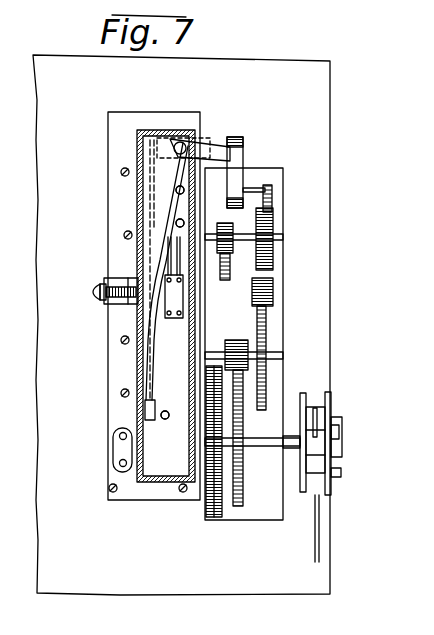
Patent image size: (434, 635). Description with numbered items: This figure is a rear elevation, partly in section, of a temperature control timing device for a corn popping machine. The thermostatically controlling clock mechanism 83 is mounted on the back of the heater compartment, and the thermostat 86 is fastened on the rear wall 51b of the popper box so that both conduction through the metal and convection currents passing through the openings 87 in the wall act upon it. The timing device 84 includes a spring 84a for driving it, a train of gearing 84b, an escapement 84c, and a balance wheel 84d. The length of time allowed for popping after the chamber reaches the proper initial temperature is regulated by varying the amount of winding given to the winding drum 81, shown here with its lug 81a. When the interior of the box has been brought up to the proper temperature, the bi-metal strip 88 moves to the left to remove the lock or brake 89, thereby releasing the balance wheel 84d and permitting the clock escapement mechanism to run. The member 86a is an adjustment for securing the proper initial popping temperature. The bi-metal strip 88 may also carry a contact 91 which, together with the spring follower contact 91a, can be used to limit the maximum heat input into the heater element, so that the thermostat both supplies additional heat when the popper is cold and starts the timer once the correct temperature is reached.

The rear wall of the popper box 51b is at (318, 86).
The thermostatically controlling clock mechanism 83 is at (178, 536).
The thermostat 86 is at (186, 364).
The adjustment member 86a is at (108, 284).
The openings 87 is at (176, 222).
The bi-metal strip 88 is at (168, 240).
The lock or brake 89 is at (214, 140).
The contact 91 is at (164, 268).
The spring follower contact 91a is at (104, 291).
The timing device 84 is at (272, 333).
The spring 84a is at (218, 418).
The train of gearing 84b is at (270, 283).
The escapement 84c is at (270, 205).
The balance wheel 84d is at (237, 152).
The winding drum 81 is at (320, 426).
The lug 81a is at (343, 472).